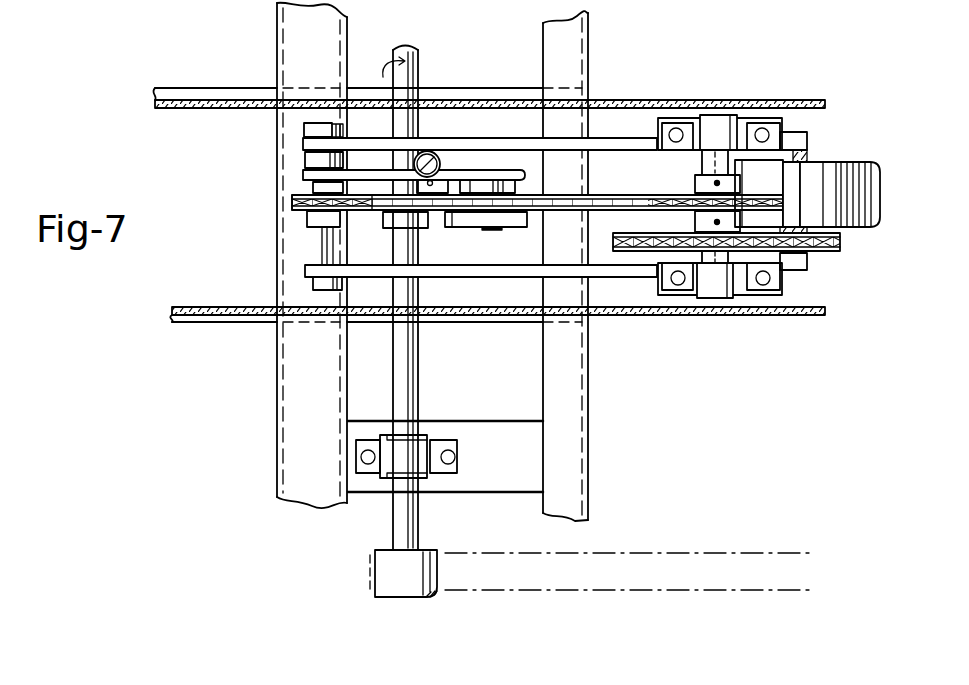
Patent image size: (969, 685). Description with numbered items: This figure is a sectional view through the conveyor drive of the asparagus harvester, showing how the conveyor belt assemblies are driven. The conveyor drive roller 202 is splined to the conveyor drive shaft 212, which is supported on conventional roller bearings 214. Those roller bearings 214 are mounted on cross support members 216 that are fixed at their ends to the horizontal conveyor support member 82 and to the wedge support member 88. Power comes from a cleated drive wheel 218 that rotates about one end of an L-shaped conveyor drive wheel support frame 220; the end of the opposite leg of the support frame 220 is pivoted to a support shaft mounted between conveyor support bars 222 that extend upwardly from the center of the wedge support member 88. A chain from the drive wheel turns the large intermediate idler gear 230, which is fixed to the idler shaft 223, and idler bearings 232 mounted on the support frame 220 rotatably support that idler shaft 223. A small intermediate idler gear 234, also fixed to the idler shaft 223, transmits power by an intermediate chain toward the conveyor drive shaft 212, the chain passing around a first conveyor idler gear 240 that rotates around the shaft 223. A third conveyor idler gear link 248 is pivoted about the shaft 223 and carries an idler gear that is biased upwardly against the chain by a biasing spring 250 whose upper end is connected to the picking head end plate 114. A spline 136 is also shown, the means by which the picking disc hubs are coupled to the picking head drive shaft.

The horizontal conveyor support member 82 is at (586, 428).
The wedge support member 88 is at (315, 498).
The picking head end plate 114 is at (750, 101).
The spline 136 is at (607, 194).
The conveyor drive roller 202 is at (385, 572).
The conveyor drive shaft 212 is at (419, 528).
The roller bearings 214 is at (447, 440).
The cross support members 216 is at (510, 425).
The cleated drive wheel 218 is at (830, 162).
The conveyor drive wheel support frame 220 is at (627, 143).
The conveyor support bars 222 is at (303, 130).
The idler shaft 223 is at (320, 237).
The large intermediate idler gear 230 is at (826, 256).
The idler bearings 232 is at (690, 128).
The small intermediate idler gear 234 is at (765, 195).
The first conveyor idler gear 240 is at (292, 201).
The third conveyor idler gear link 248 is at (467, 167).
The biasing spring 250 is at (431, 153).